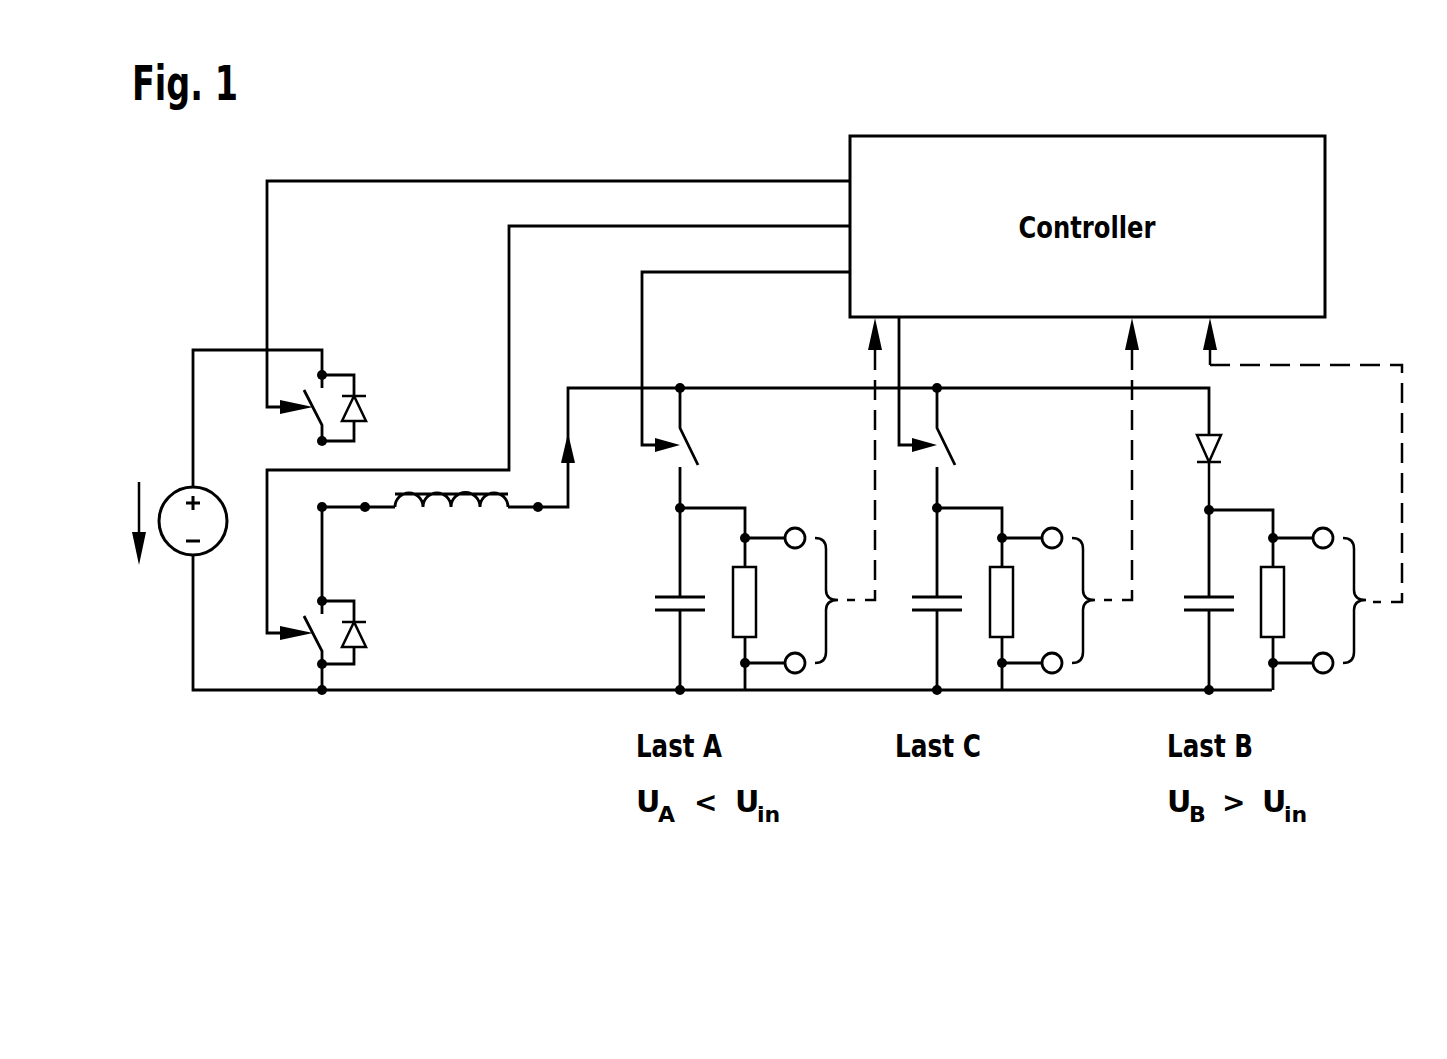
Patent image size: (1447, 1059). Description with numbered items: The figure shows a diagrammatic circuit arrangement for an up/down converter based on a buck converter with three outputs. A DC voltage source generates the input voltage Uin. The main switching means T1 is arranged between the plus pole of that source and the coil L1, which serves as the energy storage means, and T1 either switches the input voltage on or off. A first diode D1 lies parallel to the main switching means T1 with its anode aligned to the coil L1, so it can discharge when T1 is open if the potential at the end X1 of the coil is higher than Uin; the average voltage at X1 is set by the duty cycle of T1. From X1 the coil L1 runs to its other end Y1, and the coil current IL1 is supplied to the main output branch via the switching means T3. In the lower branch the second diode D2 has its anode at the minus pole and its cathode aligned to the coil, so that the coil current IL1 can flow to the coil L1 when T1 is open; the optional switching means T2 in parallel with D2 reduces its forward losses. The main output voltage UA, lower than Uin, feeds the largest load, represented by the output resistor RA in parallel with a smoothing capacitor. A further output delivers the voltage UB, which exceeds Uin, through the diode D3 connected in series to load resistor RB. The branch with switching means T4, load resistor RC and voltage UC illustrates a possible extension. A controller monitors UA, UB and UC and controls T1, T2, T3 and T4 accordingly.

The input voltage Uin is at (151, 523).
The main switching means T1 is at (277, 408).
The first diode D1 is at (369, 408).
The second switching means T2 is at (277, 598).
The second diode D2 is at (369, 632).
The coil end assigned to the input voltage X1 is at (376, 533).
The coil L1 is at (451, 531).
The coil output end Y1 is at (539, 536).
The coil current IL1 is at (598, 454).
The third switching means T3 is at (717, 448).
The fourth switching means T4 is at (975, 448).
The third diode D3 is at (1233, 472).
The output resistor of load A RA is at (769, 602).
The output resistor of load C RC is at (1026, 602).
The output resistor of load B RB is at (1297, 602).
The output voltage A UA is at (838, 495).
The output voltage C UC is at (1103, 495).
The output voltage B UB is at (1323, 495).